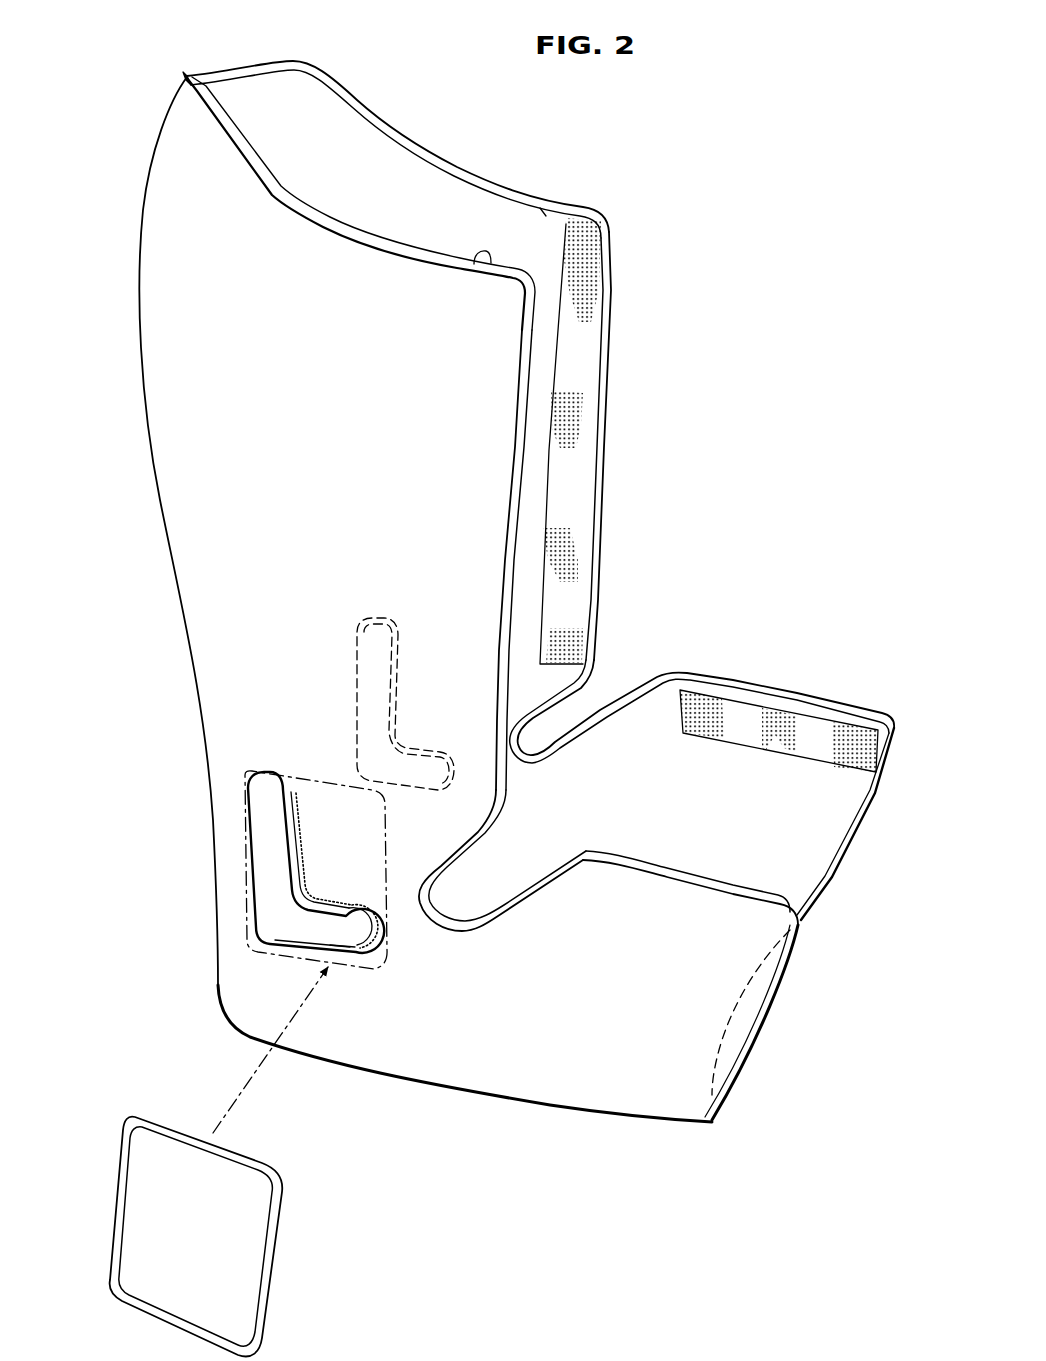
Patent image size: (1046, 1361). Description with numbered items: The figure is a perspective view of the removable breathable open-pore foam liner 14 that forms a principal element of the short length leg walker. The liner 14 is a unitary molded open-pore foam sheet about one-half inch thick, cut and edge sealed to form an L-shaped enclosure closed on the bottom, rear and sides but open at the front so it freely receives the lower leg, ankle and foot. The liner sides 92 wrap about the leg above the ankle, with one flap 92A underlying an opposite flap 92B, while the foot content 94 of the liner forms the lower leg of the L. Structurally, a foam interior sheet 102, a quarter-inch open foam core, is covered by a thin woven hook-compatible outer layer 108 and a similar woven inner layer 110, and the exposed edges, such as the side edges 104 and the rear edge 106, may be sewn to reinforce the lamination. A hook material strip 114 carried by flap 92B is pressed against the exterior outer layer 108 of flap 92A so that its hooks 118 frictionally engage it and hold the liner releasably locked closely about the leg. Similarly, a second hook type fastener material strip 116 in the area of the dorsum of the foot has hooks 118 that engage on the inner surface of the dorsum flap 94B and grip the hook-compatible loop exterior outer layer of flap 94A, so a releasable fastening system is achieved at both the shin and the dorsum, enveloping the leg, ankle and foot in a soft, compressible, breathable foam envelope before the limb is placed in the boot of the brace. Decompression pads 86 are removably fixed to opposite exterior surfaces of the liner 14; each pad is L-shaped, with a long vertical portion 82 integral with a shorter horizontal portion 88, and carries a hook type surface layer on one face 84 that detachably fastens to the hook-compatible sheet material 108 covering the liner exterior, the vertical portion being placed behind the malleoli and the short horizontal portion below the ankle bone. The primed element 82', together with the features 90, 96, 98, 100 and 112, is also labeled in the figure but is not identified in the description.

The breathable open-pore foam liner 14 is at (153, 478).
The long vertical portion 82 is at (311, 814).
The pocket (removed, alternate) 82' is at (229, 1161).
The face 84 is at (342, 943).
The decompression pads 86 is at (270, 817).
The horizontal portion 88 is at (313, 933).
The rounded end of pocket 90 is at (373, 910).
The liner sides 92 is at (472, 210).
The flap 92A is at (477, 815).
The opposite flap 92B is at (530, 633).
The foot content 94 is at (736, 813).
The flap 94A is at (700, 900).
The dorsum flap 94B is at (667, 702).
The bottom edge 96 is at (575, 1113).
The outer surface edge 98 is at (157, 355).
The side edge 100 is at (864, 828).
The foam interior sheet 102 is at (523, 387).
The side edges 104 is at (422, 163).
The rear edge 106 is at (222, 82).
The outer layer 108 is at (500, 327).
The inner layer 110 is at (543, 207).
The side binding 112 is at (513, 599).
The hook material strip 114 is at (588, 250).
The second hook type fastener material strip 116 is at (812, 745).
The hooks 118 is at (574, 420).